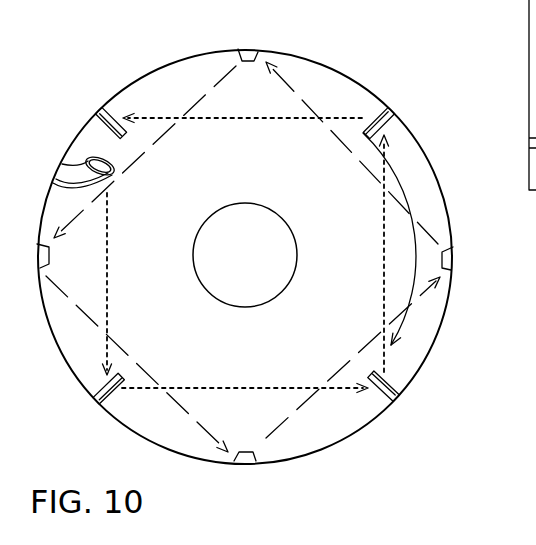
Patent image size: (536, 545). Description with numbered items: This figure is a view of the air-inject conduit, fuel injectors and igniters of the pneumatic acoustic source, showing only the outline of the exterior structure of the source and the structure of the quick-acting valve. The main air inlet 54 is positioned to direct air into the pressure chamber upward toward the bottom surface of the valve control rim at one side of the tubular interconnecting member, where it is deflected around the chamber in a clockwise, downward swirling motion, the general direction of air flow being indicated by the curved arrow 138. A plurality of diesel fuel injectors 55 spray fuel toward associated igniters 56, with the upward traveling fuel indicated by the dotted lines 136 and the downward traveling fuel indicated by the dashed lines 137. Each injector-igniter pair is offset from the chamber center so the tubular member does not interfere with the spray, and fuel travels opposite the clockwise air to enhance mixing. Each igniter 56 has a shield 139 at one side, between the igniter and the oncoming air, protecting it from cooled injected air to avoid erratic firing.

The main air inlet 54 is at (76, 162).
The diesel fuel injectors 55 is at (249, 48).
The igniters 56 is at (389, 130).
The dotted lines 136 is at (270, 389).
The dashed lines 137 is at (371, 337).
The curved arrow 138 is at (403, 190).
The shield 139 is at (106, 401).